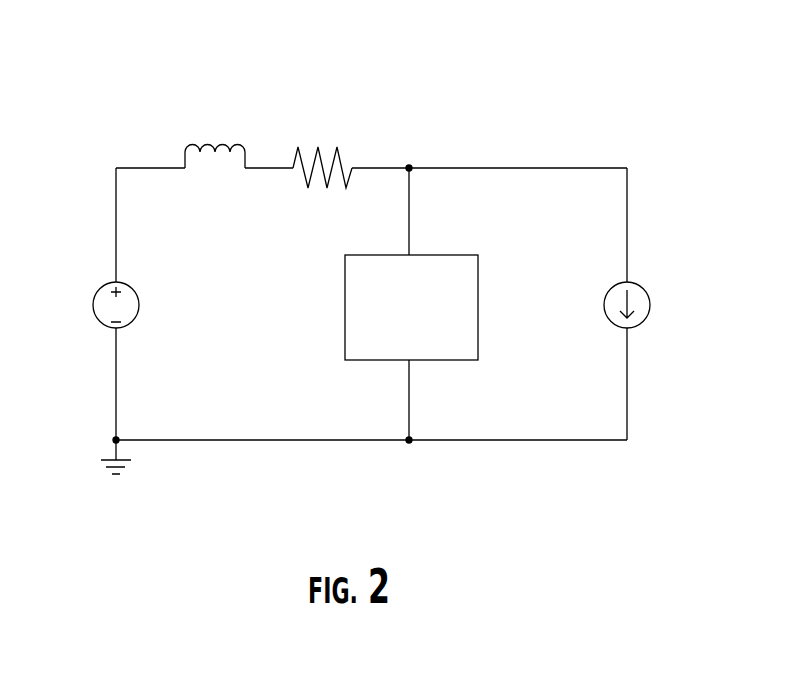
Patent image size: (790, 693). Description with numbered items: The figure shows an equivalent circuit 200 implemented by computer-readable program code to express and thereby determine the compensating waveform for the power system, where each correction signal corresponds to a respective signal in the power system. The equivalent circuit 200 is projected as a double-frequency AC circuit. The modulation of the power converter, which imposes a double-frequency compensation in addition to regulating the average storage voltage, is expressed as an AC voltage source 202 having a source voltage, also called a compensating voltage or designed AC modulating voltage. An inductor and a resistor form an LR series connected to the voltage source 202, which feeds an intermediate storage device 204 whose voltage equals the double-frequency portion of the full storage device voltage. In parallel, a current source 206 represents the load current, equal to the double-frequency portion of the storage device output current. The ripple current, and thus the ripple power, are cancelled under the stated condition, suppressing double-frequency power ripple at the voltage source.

The equivalent circuit 200 is at (106, 46).
The AC voltage source 202 is at (105, 329).
The intermediate storage device 204 is at (454, 255).
The current source 206 is at (618, 327).